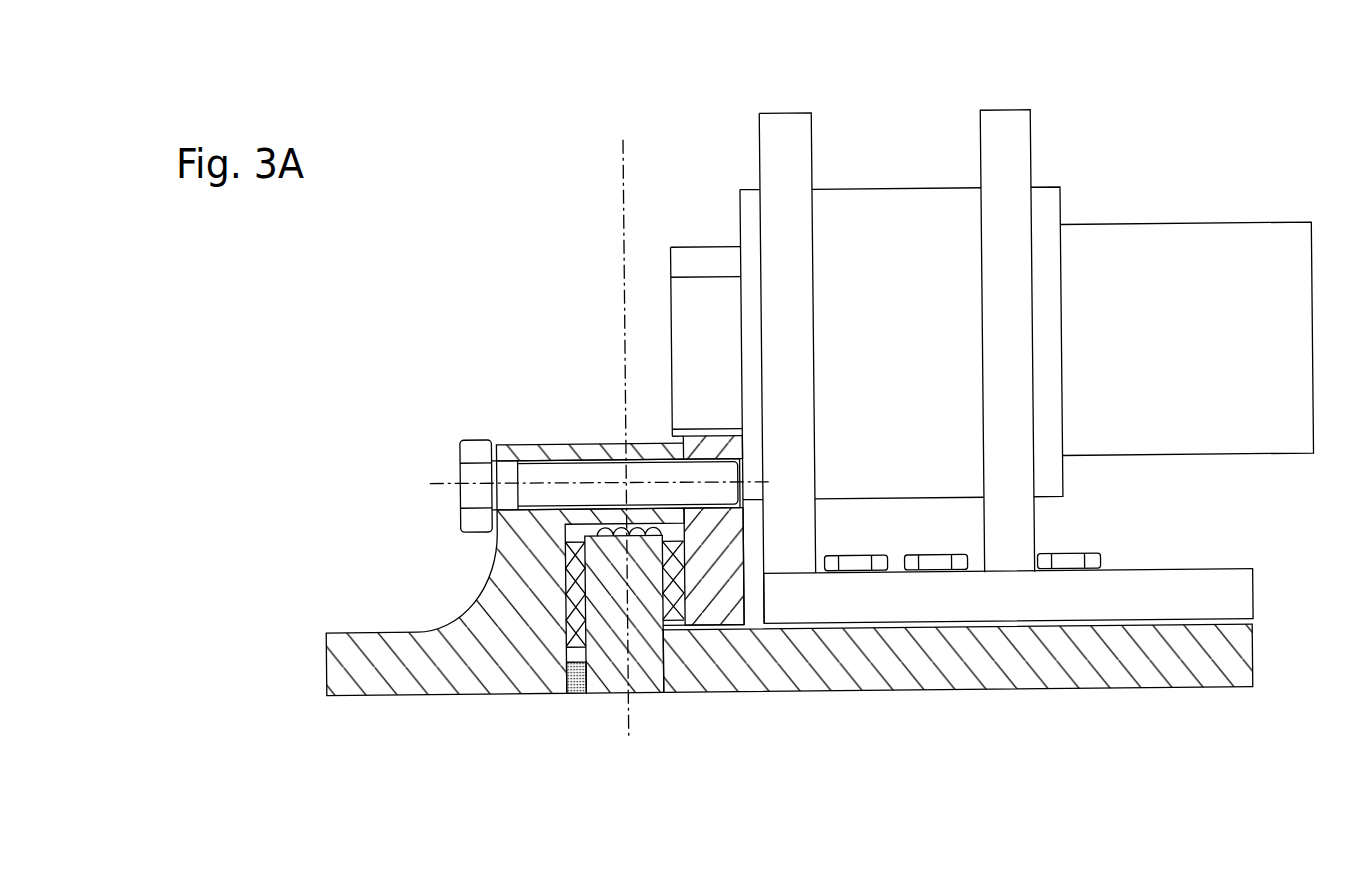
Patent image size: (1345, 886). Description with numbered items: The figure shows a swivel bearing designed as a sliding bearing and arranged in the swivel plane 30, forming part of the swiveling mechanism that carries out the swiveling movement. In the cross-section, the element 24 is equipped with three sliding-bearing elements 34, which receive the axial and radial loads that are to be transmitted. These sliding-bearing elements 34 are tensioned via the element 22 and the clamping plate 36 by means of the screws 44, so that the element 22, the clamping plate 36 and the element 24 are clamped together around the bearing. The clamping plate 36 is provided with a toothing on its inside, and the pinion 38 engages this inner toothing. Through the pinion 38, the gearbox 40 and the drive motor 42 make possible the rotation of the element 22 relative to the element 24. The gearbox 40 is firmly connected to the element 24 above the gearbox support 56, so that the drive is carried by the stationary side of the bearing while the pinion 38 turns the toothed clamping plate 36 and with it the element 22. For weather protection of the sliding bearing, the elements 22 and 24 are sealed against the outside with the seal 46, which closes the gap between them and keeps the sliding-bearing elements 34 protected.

The element 22 is at (410, 658).
The element 24 is at (987, 657).
The swivel plane 30 is at (624, 698).
The sliding-bearing elements 34 is at (617, 527).
The clamping plate 36 is at (709, 445).
The pinion 38 is at (701, 262).
The gearbox 40 is at (881, 271).
The drive motor 42 is at (1136, 313).
The screws 44 is at (474, 472).
The seal 46 is at (564, 688).
The gearbox support 56 is at (1004, 539).